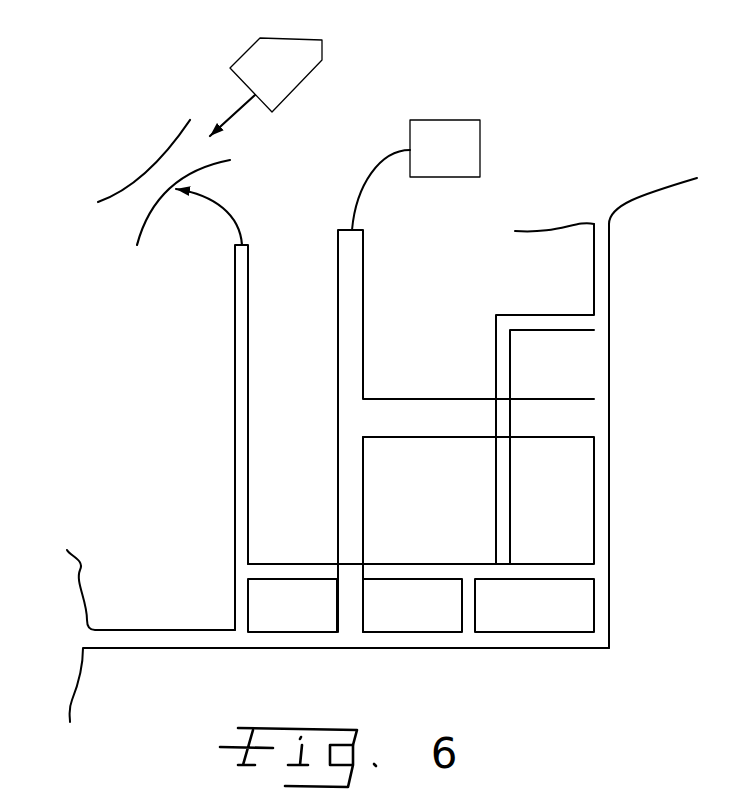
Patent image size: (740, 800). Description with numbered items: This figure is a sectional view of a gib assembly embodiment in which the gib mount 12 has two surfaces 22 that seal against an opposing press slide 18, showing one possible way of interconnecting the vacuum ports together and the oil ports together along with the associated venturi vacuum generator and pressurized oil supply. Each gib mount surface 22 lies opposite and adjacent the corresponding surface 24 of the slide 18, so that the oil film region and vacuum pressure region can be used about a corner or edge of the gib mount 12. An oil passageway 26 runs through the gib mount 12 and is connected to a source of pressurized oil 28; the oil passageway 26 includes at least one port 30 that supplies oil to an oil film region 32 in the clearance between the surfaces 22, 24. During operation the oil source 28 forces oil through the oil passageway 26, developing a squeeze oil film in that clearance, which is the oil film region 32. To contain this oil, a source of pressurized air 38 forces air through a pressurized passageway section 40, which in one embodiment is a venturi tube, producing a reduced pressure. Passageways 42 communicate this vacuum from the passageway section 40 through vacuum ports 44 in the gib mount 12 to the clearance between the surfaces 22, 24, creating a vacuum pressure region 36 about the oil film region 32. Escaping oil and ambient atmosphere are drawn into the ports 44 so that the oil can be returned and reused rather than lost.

The gib mount 12 is at (198, 360).
The press slide 18 is at (652, 281).
The surface 22 is at (592, 479).
The surface 24 is at (609, 553).
The oil passageway 26 is at (364, 384).
The source of pressurized oil 28 is at (476, 140).
The port 30 is at (593, 398).
The oil film region 32 is at (600, 417).
The vacuum pressure region 36 is at (611, 330).
The source of pressurized air 38 is at (322, 44).
The pressurized passageway section 40 is at (178, 133).
The passageways 42 is at (234, 503).
The vacuum ports 44 is at (594, 313).